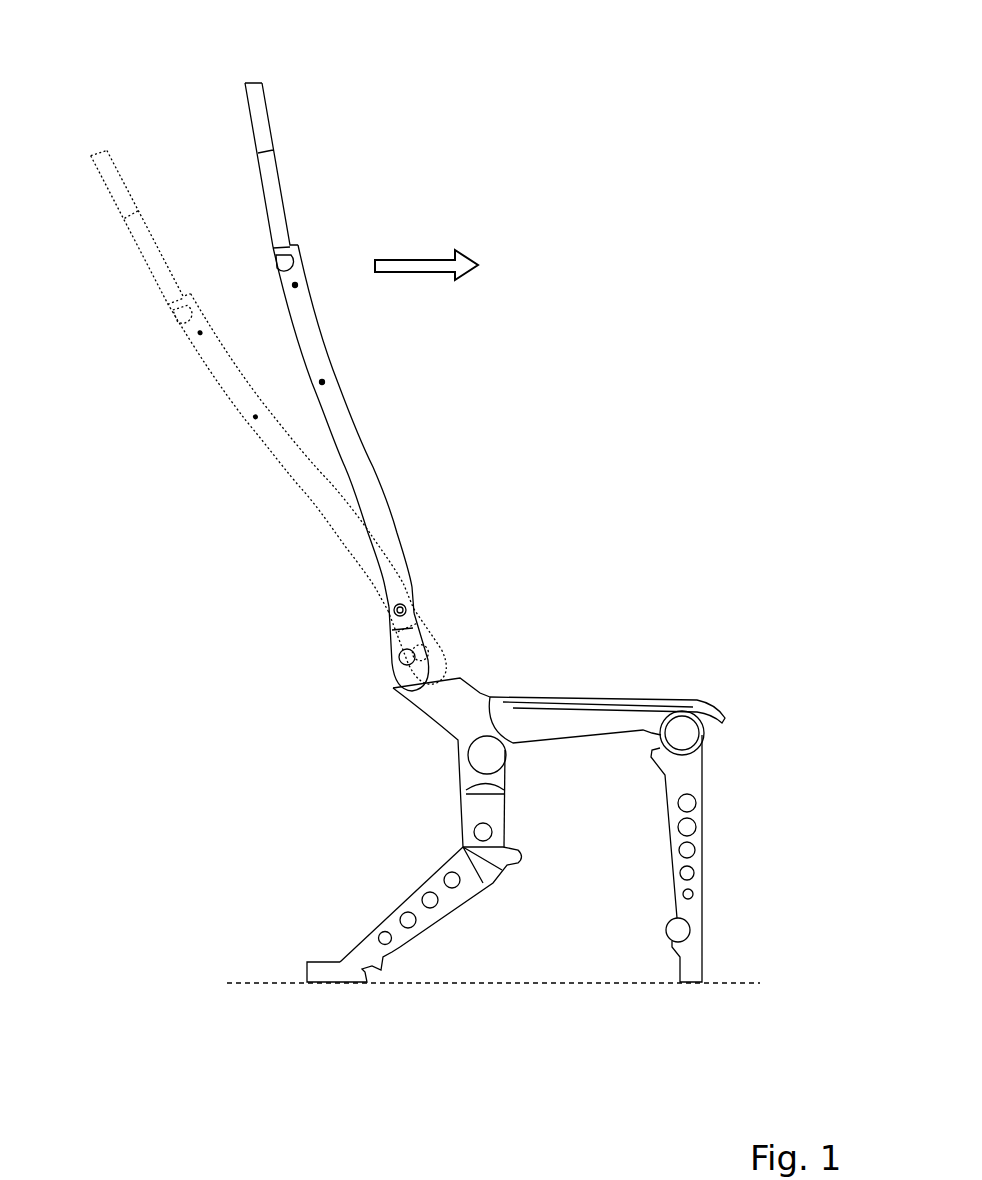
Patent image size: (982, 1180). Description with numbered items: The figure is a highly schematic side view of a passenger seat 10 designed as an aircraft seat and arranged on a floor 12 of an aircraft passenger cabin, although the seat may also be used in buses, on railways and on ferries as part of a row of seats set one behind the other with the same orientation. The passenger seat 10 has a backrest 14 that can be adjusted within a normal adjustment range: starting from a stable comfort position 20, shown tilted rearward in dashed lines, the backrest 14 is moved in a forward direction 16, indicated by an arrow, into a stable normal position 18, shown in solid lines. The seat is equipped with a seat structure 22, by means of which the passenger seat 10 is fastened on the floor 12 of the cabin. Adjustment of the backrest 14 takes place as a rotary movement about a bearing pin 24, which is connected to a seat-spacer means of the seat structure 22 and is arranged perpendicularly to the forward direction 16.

The passenger seat 10 is at (292, 628).
The floor 12 is at (218, 1074).
The backrest 14 is at (246, 307).
The forward direction 16 is at (418, 247).
The normal position 18 is at (248, 78).
The comfort position 20 is at (98, 145).
The seat structure 22 is at (436, 820).
The bearing pin 24 is at (393, 657).